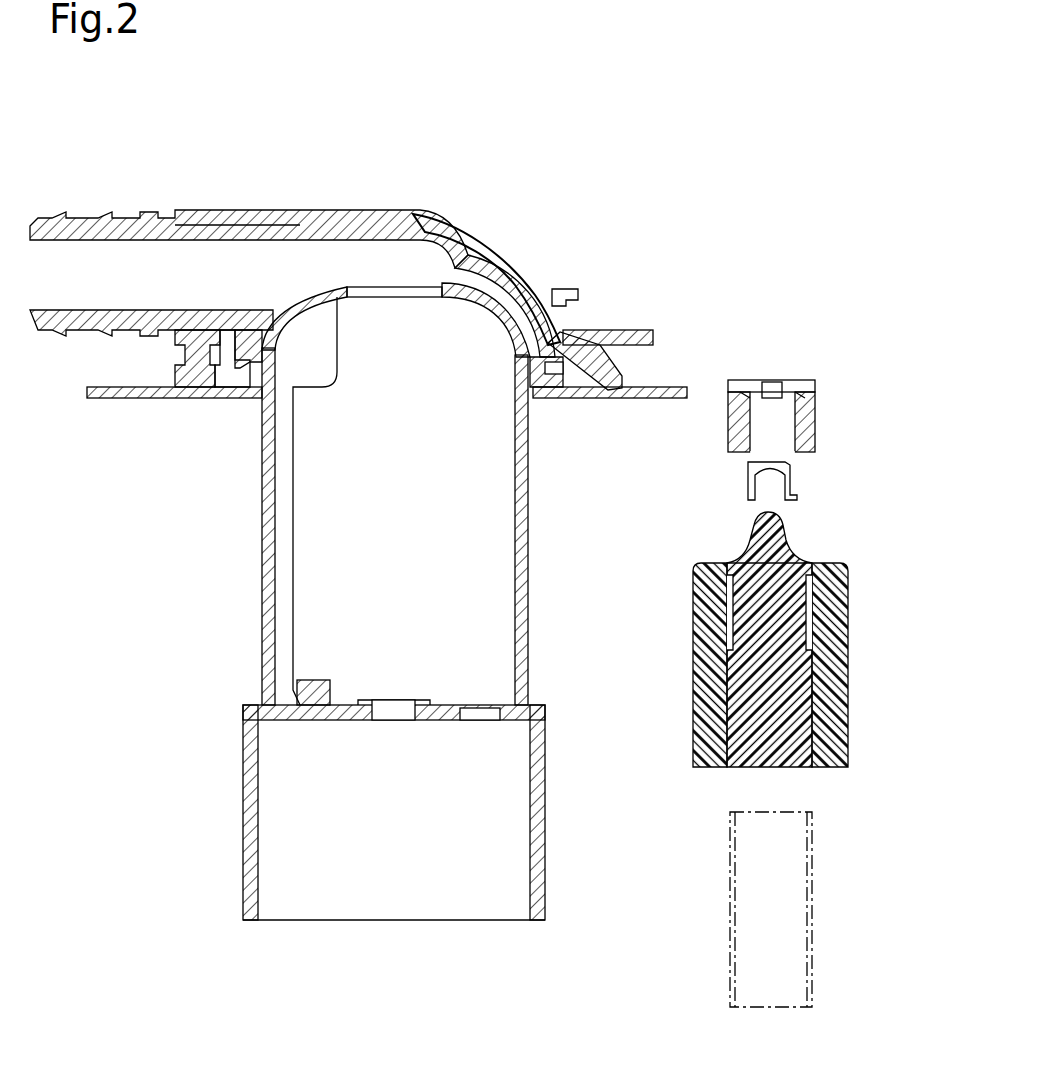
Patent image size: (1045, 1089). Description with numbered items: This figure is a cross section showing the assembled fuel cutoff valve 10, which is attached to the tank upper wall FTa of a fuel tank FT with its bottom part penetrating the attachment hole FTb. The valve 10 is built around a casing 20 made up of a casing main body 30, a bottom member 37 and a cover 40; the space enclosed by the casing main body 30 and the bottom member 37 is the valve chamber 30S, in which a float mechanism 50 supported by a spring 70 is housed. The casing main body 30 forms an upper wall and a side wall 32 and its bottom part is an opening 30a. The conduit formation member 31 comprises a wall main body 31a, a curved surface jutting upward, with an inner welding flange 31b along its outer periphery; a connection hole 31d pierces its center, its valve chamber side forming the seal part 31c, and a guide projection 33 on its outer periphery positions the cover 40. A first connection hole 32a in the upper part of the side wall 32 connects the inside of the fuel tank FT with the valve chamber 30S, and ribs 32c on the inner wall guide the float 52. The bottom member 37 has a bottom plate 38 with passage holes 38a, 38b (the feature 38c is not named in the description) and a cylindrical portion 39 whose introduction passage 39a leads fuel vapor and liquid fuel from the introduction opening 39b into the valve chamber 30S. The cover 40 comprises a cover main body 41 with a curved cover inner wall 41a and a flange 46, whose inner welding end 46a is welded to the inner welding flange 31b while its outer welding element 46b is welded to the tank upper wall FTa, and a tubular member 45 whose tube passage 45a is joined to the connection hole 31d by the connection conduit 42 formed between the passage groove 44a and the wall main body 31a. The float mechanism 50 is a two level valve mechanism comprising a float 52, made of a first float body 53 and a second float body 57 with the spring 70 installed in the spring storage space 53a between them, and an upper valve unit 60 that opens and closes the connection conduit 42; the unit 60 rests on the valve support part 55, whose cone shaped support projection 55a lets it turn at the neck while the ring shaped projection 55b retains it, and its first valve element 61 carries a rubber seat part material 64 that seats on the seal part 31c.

The fuel cutoff valve 10 is at (581, 166).
The casing 20 is at (170, 507).
The casing main body 30 is at (262, 553).
The valve chamber 30S is at (505, 547).
The opening 30a is at (497, 690).
The conduit formation member 31 is at (300, 300).
The wall main body 31a is at (336, 288).
The inner welding flange 31b is at (548, 296).
The seal part 31c is at (445, 300).
The connection hole 31d is at (360, 292).
The side wall 32 is at (528, 582).
The first connection hole 32a is at (540, 385).
The rib 32c is at (293, 522).
The guide projection 33 is at (297, 300).
The bottom member 37 is at (243, 740).
The bottom plate 38 is at (545, 715).
The passage hole 38a is at (395, 700).
The passage hole 38b is at (470, 710).
The rib 38c is at (332, 690).
The cylindrical portion 39 is at (545, 860).
The introduction passage 39a is at (505, 838).
The introduction opening 39b is at (470, 912).
The cover 40 is at (352, 210).
The cover main body 41 is at (565, 345).
The cover inner wall 41a is at (462, 250).
The connection conduit 42 is at (405, 222).
The passage groove 44a is at (240, 236).
The tubular member 45 is at (160, 215).
The tube passage 45a is at (84, 215).
The flange 46 is at (722, 280).
The inner welding end 46a is at (570, 340).
The outer welding element 46b is at (595, 385).
The float mechanism 50 is at (832, 372).
The float 52 is at (900, 590).
The first float body 53 is at (795, 610).
The spring storage space 53a is at (702, 768).
The valve support part 55 is at (780, 518).
The support projection 55a is at (760, 522).
The ring shaped projection 55b is at (782, 535).
The second float body 57 is at (840, 640).
The upper valve unit 60 is at (875, 395).
The first valve element 61 is at (802, 478).
The seat part material 64 is at (815, 385).
The spring 70 is at (812, 905).
The fuel tank FT is at (387, 437).
The tank upper wall FTa is at (640, 400).
The attachment hole FTb is at (560, 398).